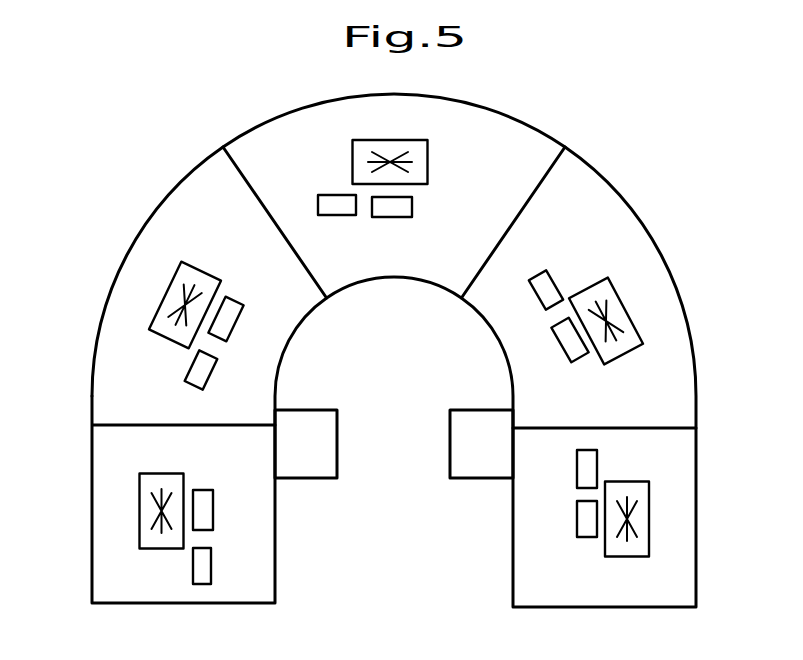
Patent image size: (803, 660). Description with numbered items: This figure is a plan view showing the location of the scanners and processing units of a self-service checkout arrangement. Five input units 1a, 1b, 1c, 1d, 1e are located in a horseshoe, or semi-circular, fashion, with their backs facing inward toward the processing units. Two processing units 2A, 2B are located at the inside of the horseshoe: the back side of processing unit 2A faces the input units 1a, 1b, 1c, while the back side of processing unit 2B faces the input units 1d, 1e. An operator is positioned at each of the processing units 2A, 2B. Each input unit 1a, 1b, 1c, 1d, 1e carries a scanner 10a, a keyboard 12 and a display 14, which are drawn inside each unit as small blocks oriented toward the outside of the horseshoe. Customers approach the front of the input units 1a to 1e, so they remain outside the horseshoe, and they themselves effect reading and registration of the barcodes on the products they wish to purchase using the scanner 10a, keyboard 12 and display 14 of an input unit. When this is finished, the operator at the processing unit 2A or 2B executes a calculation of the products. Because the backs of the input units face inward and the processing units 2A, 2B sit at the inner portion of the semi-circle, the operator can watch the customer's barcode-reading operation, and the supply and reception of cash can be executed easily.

The input unit 1a is at (100, 480).
The input unit 1b is at (122, 272).
The input unit 1c is at (523, 119).
The input unit 1d is at (668, 313).
The input unit 1e is at (692, 550).
The processing unit 2A is at (305, 470).
The processing unit 2B is at (470, 470).
The scanner 10a is at (428, 168).
The keyboard 12 is at (390, 216).
The display 14 is at (332, 198).